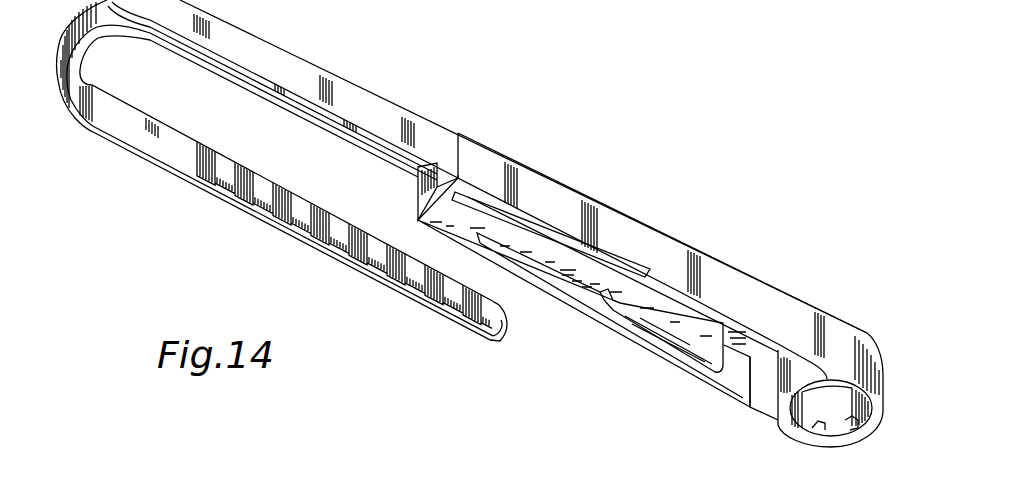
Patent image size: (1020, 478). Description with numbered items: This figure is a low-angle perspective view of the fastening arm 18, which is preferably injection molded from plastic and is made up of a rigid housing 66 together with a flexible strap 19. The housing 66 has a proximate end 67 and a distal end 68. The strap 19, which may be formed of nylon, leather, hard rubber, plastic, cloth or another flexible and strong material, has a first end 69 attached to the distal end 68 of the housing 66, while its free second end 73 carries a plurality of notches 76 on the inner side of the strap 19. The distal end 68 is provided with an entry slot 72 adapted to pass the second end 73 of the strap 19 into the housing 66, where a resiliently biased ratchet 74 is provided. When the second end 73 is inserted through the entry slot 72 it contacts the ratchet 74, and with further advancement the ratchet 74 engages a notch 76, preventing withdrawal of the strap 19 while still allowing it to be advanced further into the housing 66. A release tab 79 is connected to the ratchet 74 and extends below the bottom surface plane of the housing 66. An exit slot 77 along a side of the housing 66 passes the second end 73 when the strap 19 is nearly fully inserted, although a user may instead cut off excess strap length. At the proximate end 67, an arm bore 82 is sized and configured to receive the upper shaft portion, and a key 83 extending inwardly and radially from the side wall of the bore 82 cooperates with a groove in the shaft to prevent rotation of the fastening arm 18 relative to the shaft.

The fastening arm 18 is at (587, 148).
The flexible strap 19 is at (216, 18).
The rigid housing 66 is at (647, 222).
The proximate end 67 is at (877, 337).
The distal end 68 is at (478, 160).
The first end 69 is at (443, 151).
The entry slot 72 is at (420, 177).
The second end 73 is at (503, 335).
The ratchet 74 is at (590, 296).
The notches 76 is at (358, 270).
The exit slot 77 is at (760, 413).
The release tab 79 is at (690, 345).
The arm bore 82 is at (823, 427).
The key 83 is at (850, 420).